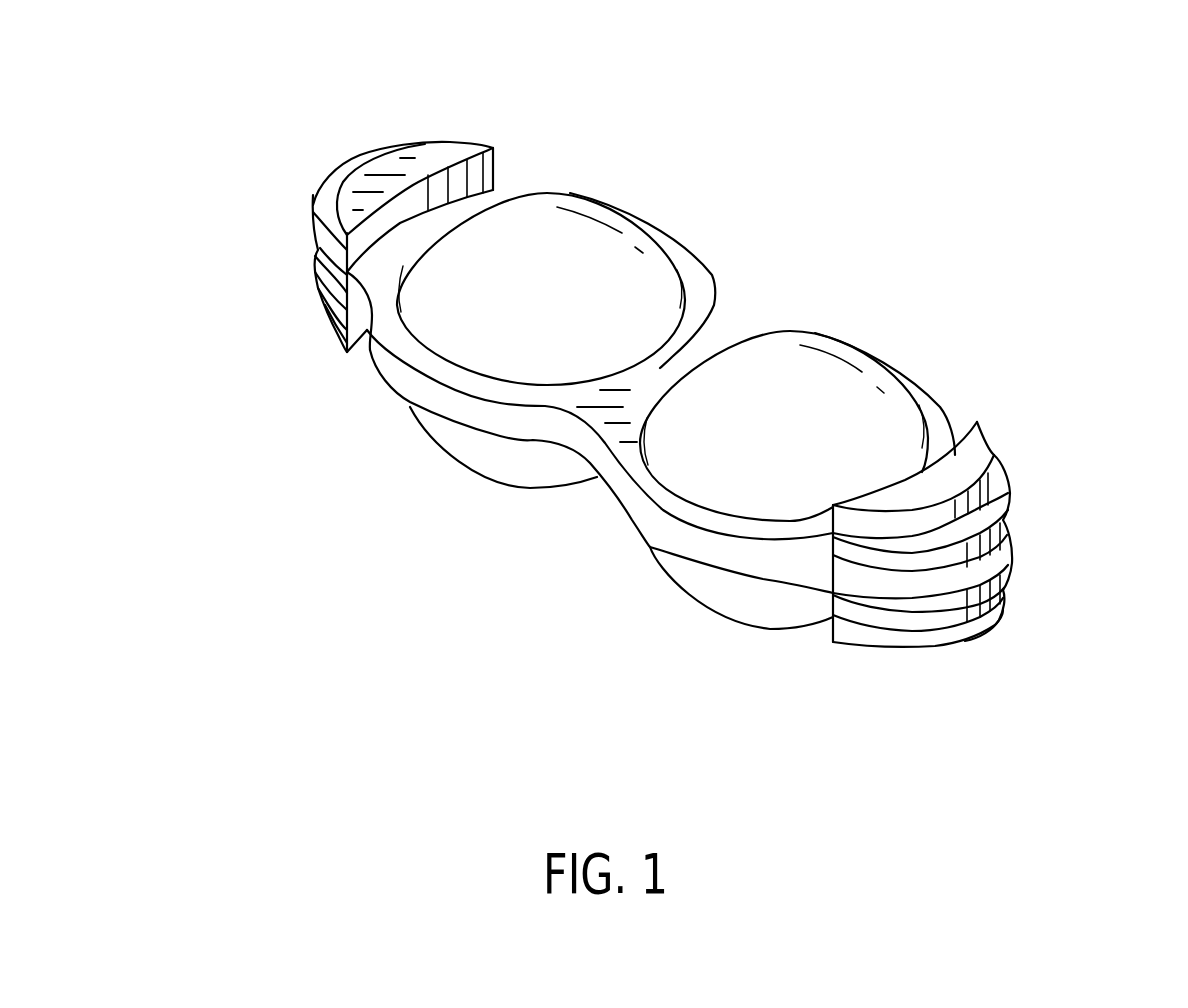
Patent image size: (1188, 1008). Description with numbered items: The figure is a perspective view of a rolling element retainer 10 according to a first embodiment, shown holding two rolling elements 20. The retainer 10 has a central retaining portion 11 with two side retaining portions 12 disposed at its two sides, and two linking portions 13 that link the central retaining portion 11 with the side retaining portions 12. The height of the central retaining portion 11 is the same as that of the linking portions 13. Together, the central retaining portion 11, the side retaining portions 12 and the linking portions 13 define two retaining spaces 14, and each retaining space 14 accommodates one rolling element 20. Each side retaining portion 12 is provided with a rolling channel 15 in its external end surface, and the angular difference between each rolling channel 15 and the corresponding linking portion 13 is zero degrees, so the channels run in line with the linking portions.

The retainer 10 is at (945, 399).
The central retaining portion 11 is at (700, 320).
The side retaining portion 12 is at (378, 172).
The linking portion 13 is at (684, 262).
The retaining space 14 is at (480, 378).
The rolling channel 15 is at (327, 272).
The rolling element 20 is at (592, 197).